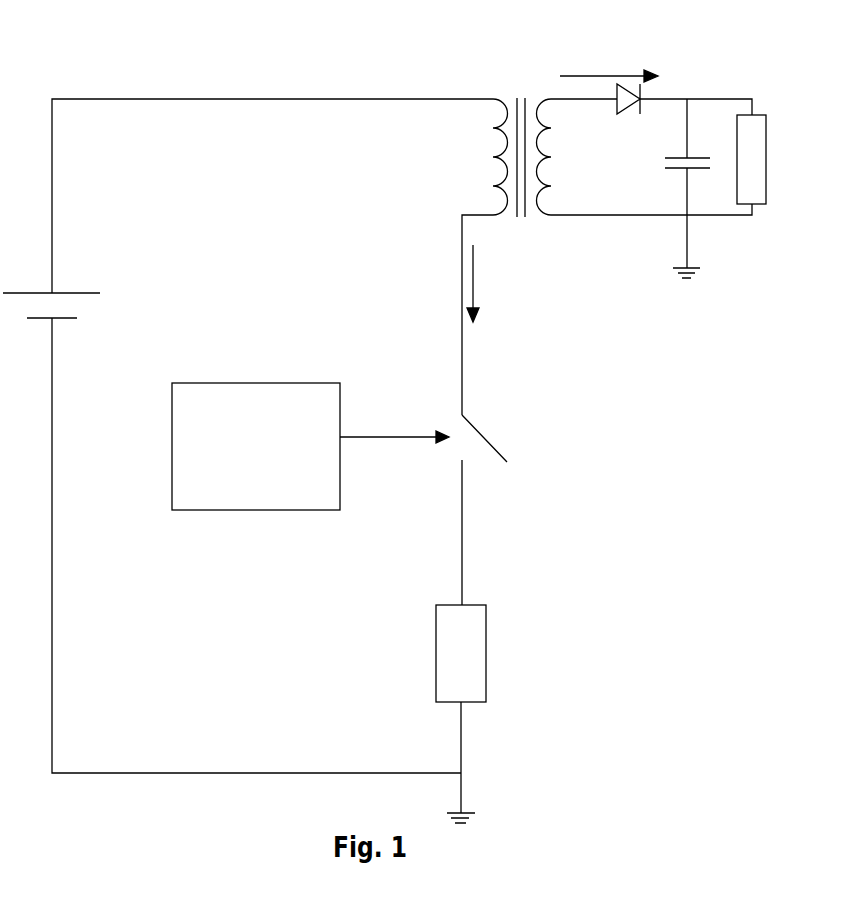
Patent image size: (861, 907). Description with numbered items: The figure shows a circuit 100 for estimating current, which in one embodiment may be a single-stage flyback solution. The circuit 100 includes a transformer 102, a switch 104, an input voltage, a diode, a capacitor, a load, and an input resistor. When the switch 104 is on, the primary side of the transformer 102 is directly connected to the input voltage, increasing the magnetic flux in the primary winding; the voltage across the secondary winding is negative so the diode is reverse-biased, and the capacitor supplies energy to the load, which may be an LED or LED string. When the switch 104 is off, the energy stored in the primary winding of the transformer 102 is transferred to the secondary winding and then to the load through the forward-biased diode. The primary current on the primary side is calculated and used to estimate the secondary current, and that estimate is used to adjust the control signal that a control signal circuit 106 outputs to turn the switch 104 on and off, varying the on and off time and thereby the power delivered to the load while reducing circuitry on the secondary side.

The circuit 100 is at (125, 45).
The transformer 102 is at (437, 337).
The switch 104 is at (495, 453).
The control signal circuit 106 is at (257, 383).